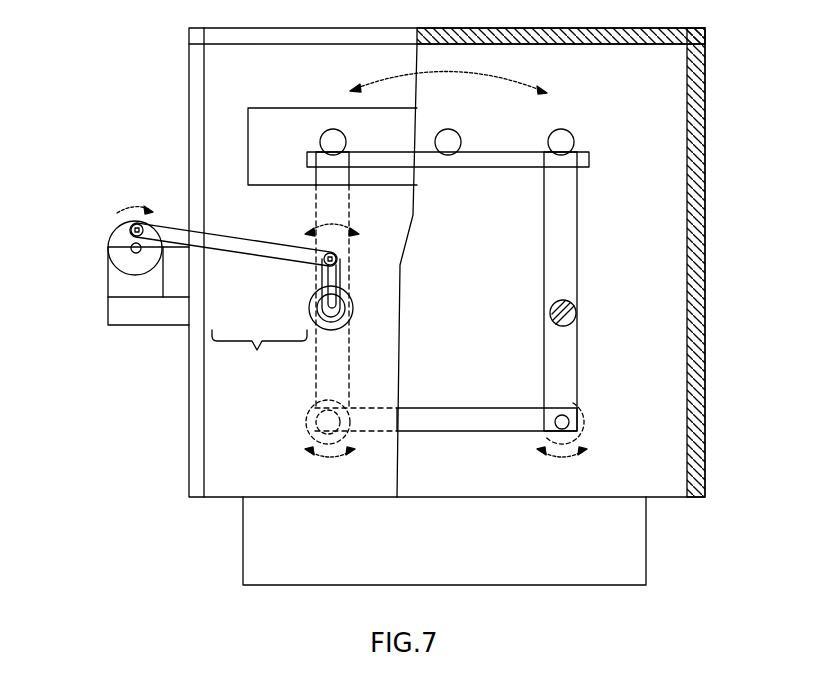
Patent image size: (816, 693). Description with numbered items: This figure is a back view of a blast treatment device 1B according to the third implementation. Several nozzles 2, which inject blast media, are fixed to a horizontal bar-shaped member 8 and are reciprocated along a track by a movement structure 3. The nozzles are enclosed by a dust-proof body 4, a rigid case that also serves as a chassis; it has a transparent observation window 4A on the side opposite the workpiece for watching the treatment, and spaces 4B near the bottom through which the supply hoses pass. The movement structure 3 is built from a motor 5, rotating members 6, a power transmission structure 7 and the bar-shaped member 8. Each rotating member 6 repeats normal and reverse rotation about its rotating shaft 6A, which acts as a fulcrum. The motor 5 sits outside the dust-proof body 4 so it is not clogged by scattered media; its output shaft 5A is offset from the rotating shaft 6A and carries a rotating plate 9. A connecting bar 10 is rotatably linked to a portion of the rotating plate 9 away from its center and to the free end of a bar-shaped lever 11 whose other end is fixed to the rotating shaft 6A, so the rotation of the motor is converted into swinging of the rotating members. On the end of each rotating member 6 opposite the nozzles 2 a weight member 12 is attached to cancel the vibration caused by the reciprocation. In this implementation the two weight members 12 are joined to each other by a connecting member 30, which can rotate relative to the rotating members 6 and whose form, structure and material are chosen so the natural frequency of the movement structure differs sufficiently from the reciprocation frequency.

The blast treatment device 1B is at (132, 79).
The nozzle 2 is at (563, 130).
The movement structure 3 is at (585, 343).
The dust-proof body 4 is at (707, 282).
The transparent observation window 4A is at (275, 126).
The space 4B is at (664, 490).
The motor 5 is at (108, 292).
The output shaft 5A is at (131, 248).
The rotating member 6 is at (544, 253).
The rotating shaft 6A is at (577, 310).
The power transmission structure 7 is at (259, 360).
The bar-shaped member 8 is at (497, 167).
The rotating plate 9 is at (162, 257).
The connecting bar 10 is at (242, 257).
The lever 11 is at (317, 283).
The weight member 12 is at (579, 413).
The connecting member 30 is at (455, 408).